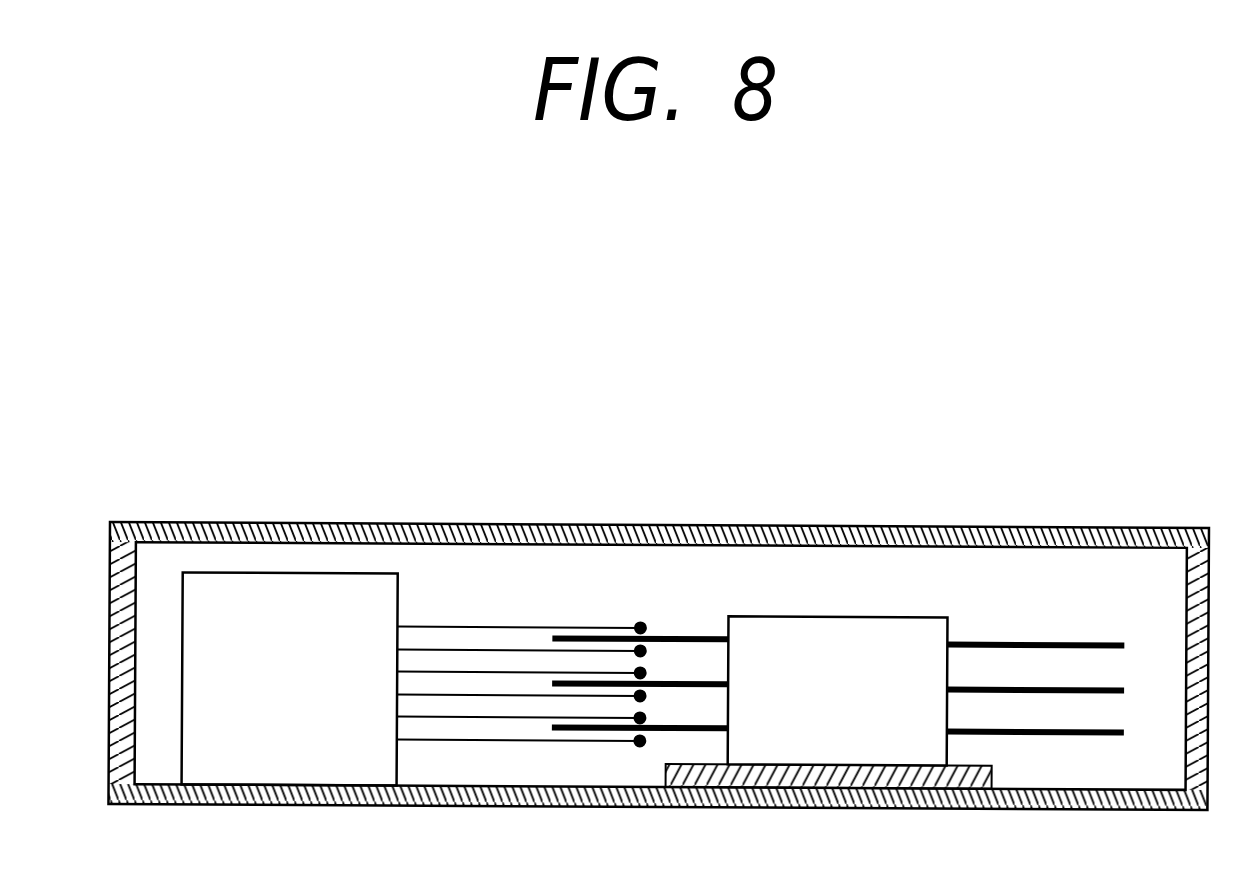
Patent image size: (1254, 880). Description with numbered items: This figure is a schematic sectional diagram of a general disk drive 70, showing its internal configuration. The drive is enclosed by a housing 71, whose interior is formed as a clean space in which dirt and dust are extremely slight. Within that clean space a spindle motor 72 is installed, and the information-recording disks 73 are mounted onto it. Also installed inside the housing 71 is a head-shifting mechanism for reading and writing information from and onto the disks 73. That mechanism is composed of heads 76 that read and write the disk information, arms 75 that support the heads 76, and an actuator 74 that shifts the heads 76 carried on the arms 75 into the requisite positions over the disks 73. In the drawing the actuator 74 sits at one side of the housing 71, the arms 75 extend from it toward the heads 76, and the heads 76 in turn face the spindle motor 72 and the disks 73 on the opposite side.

The sensor unit 70 is at (707, 399).
The housing 71 is at (936, 522).
The spindle motor 72 is at (826, 684).
The disks 73 is at (1035, 681).
The actuator 74 is at (259, 613).
The arms 75 is at (460, 648).
The heads 76 is at (645, 642).